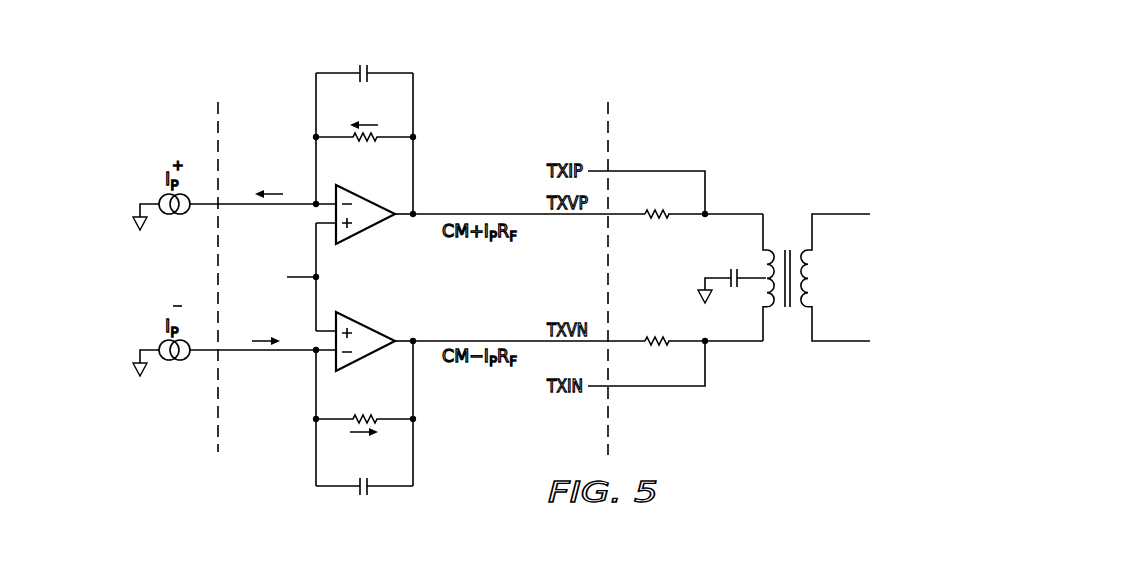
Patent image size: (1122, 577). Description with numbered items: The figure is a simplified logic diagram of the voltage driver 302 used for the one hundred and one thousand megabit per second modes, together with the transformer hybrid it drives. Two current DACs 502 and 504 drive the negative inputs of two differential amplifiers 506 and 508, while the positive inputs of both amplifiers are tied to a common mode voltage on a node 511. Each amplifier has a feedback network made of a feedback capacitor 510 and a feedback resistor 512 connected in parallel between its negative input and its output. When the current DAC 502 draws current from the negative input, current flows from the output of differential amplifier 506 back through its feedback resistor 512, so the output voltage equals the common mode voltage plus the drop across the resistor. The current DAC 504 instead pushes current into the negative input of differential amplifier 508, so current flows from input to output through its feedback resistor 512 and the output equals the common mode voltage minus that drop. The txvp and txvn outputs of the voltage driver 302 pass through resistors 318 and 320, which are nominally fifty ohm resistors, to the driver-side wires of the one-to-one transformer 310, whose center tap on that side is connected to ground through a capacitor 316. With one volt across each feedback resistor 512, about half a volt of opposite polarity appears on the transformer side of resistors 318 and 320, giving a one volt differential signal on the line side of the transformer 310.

The voltage driver 302 is at (522, 110).
The transformer 310 is at (817, 349).
The capacitor 316 is at (732, 266).
The resistor 318 is at (654, 224).
The resistor 320 is at (655, 333).
The current DAC 502 is at (177, 215).
The current DAC 504 is at (177, 361).
The differential amplifier 506 is at (372, 233).
The differential amplifier 508 is at (382, 307).
The feedback capacitor 510 is at (358, 64).
The node 511 is at (315, 272).
The feedback resistor 512 is at (368, 142).